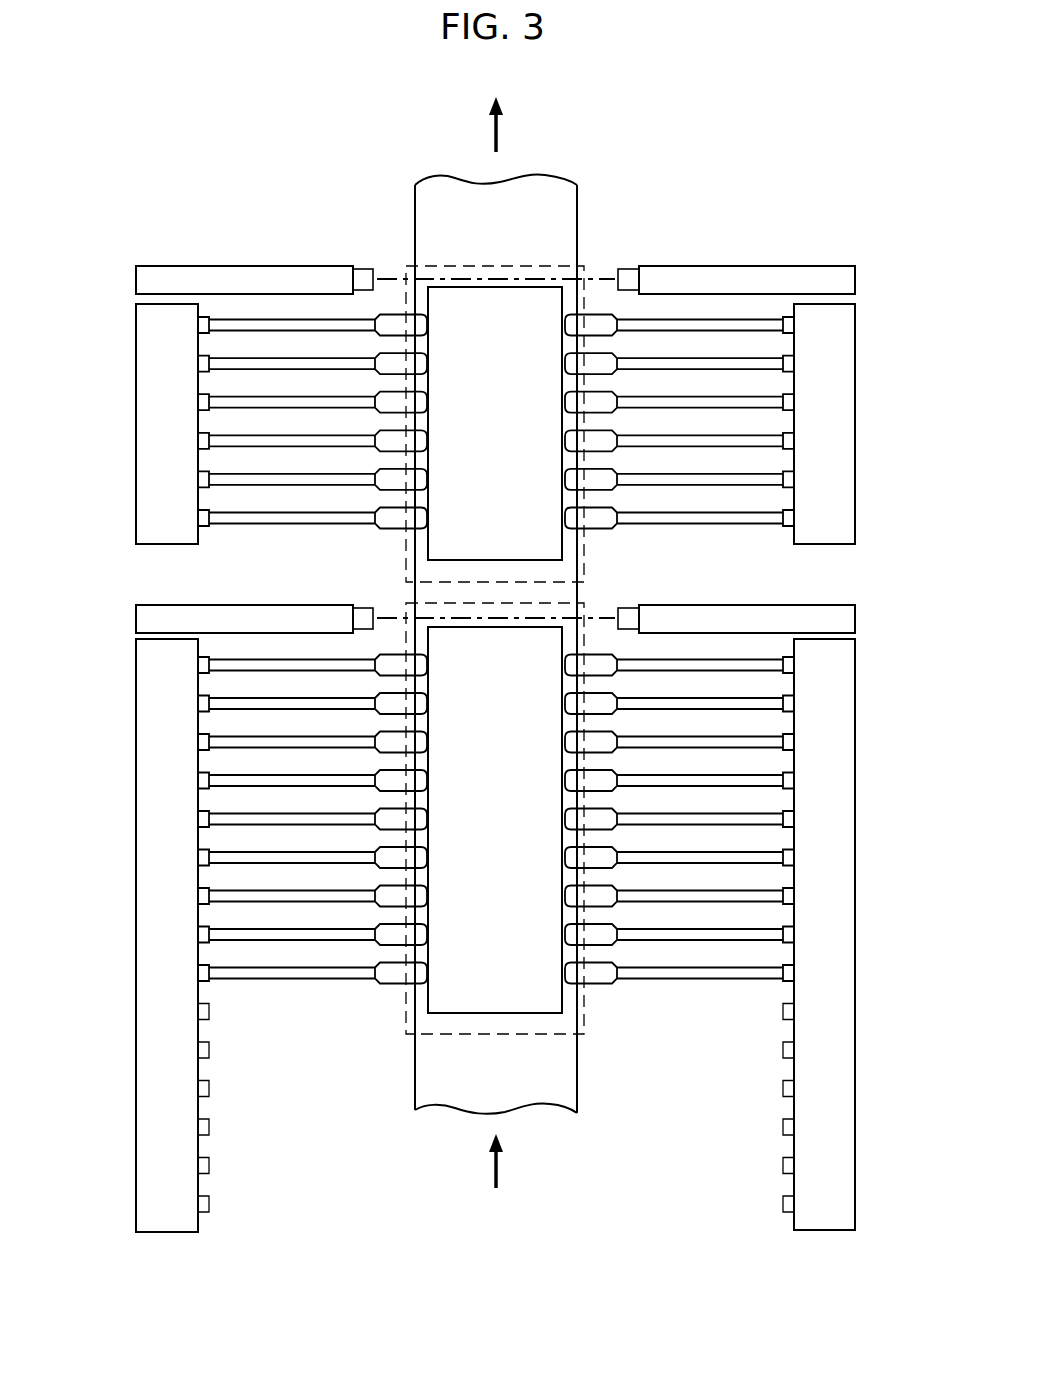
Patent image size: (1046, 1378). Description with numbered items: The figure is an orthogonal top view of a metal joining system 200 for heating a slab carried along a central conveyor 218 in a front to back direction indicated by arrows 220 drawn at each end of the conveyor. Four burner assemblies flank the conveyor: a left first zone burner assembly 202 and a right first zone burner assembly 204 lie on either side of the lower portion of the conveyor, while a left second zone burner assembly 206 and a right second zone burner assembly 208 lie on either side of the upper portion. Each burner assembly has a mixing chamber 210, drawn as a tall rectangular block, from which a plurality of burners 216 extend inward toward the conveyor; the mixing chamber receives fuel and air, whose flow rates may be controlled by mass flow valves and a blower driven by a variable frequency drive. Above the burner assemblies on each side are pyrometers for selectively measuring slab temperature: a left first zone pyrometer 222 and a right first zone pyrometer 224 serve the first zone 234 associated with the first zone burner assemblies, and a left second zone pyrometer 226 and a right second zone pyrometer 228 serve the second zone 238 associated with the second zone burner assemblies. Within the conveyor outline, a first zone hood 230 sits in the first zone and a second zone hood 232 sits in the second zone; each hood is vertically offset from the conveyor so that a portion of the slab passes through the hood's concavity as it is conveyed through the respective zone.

The metal joining system 200 is at (638, 114).
The left first zone burner assembly 202 is at (127, 1032).
The right first zone burner assembly 204 is at (863, 1032).
The left second zone burner assembly 206 is at (127, 388).
The right second zone burner assembly 208 is at (863, 388).
The mixing chamber 210 is at (133, 470).
The burners 216 is at (291, 316).
The conveyor 218 is at (414, 1068).
The arrows 220 is at (494, 133).
The left first zone pyrometer 222 is at (245, 605).
The right first zone pyrometer 224 is at (745, 605).
The left second zone pyrometer 226 is at (245, 265).
The right second zone pyrometer 228 is at (745, 265).
The first zone hood 230 is at (515, 818).
The second zone hood 232 is at (515, 431).
The first zone 234 is at (495, 1034).
The second zone 238 is at (495, 265).